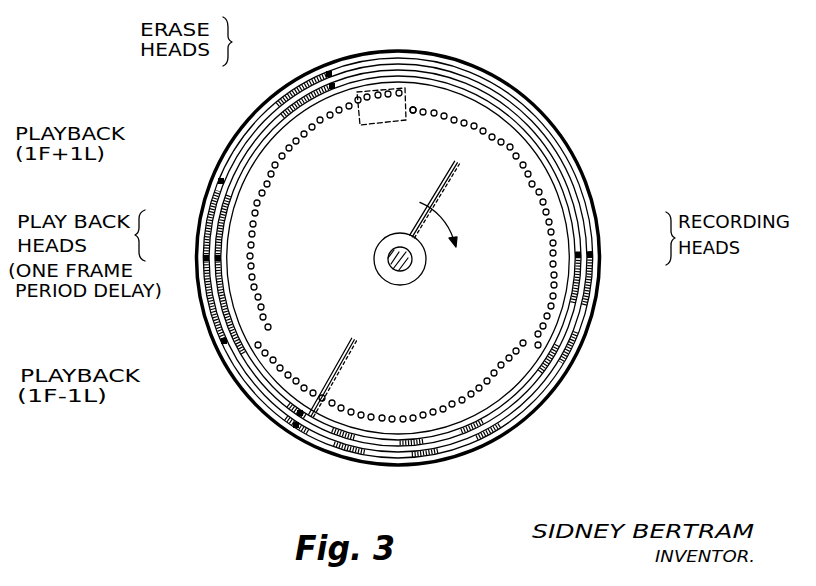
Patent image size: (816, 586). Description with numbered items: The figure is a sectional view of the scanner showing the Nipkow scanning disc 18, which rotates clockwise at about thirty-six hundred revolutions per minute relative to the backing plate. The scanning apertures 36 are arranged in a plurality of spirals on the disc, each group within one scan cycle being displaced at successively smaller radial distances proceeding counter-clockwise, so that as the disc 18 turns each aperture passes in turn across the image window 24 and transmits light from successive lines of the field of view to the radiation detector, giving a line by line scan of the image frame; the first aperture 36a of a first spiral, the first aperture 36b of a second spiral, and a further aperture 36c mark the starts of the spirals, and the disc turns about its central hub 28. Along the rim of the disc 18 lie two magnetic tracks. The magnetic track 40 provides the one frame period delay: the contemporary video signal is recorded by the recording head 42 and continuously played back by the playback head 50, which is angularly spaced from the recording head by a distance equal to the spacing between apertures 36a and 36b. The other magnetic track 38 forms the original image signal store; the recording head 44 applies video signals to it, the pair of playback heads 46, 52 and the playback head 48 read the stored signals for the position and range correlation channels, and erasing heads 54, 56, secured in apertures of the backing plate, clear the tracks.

The Nipkow scanning disc 18 is at (554, 121).
The image window 24 is at (386, 123).
The disc hub / drive shaft 28 is at (397, 248).
The scanning apertures 36 is at (258, 212).
The first aperture of first spiral 36a is at (404, 92).
The first aperture of second spiral 36b is at (262, 345).
The track transition position 36c is at (536, 341).
The magnetic track 38 is at (575, 170).
The magnetic track 40 is at (579, 209).
The recording head 42 is at (579, 252).
The recording head 44 is at (594, 255).
The playback head 46 is at (223, 342).
The playback head 48 is at (218, 258).
The playback head 50 is at (206, 257).
The playback head 52 is at (221, 181).
The erase head 54 is at (328, 73).
The erasing head 56 is at (332, 87).